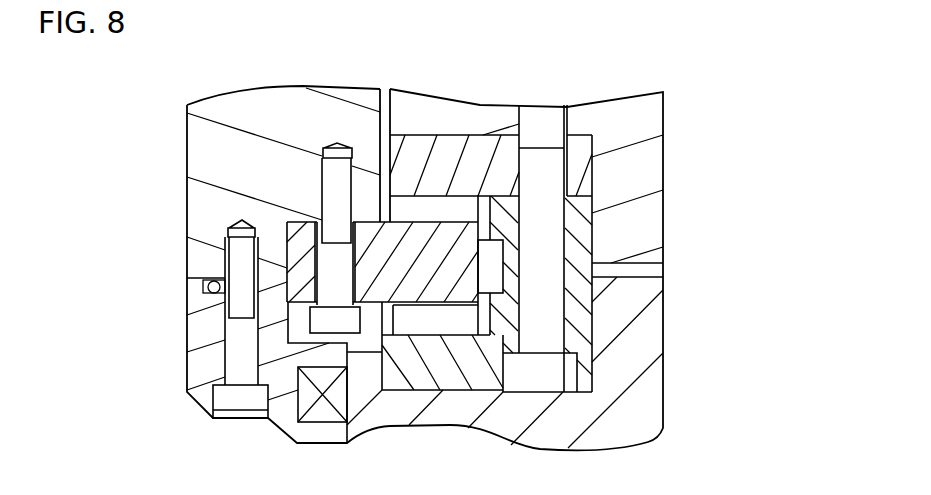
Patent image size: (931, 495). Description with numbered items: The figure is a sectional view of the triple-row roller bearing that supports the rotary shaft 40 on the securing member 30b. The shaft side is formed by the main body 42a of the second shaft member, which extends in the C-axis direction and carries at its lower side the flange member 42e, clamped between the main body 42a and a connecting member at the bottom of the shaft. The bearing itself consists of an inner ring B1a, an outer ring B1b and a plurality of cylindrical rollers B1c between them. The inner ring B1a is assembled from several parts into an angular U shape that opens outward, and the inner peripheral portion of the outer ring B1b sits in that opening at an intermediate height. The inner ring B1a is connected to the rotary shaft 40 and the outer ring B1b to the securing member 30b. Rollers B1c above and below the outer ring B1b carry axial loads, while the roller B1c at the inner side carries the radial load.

The rotary shaft 40 is at (667, 116).
The securing member 30b is at (187, 105).
The main body 42a is at (618, 168).
The flange member 42e is at (625, 425).
The inner ring B1a is at (583, 237).
The outer ring B1b is at (412, 250).
The cylindrical rollers B1c is at (452, 209).